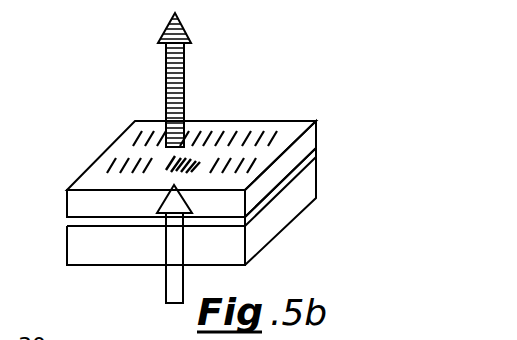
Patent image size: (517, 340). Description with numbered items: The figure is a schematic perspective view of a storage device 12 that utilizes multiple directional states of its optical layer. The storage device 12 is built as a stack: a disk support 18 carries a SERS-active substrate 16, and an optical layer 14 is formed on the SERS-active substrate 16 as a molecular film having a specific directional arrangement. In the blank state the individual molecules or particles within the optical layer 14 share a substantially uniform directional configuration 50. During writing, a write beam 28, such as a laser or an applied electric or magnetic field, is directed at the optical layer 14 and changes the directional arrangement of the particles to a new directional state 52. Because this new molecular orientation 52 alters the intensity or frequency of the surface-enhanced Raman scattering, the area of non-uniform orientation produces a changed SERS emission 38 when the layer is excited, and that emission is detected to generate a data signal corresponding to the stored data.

The storage device 12 is at (192, 166).
The optical layer 14 is at (303, 143).
The SERS-active substrate 16 is at (280, 190).
The support 18 is at (267, 228).
The write beam 28 is at (165, 288).
The SERS emission 38 is at (185, 63).
The uniform directional configuration 50 is at (312, 121).
The new directional state 52 is at (172, 170).